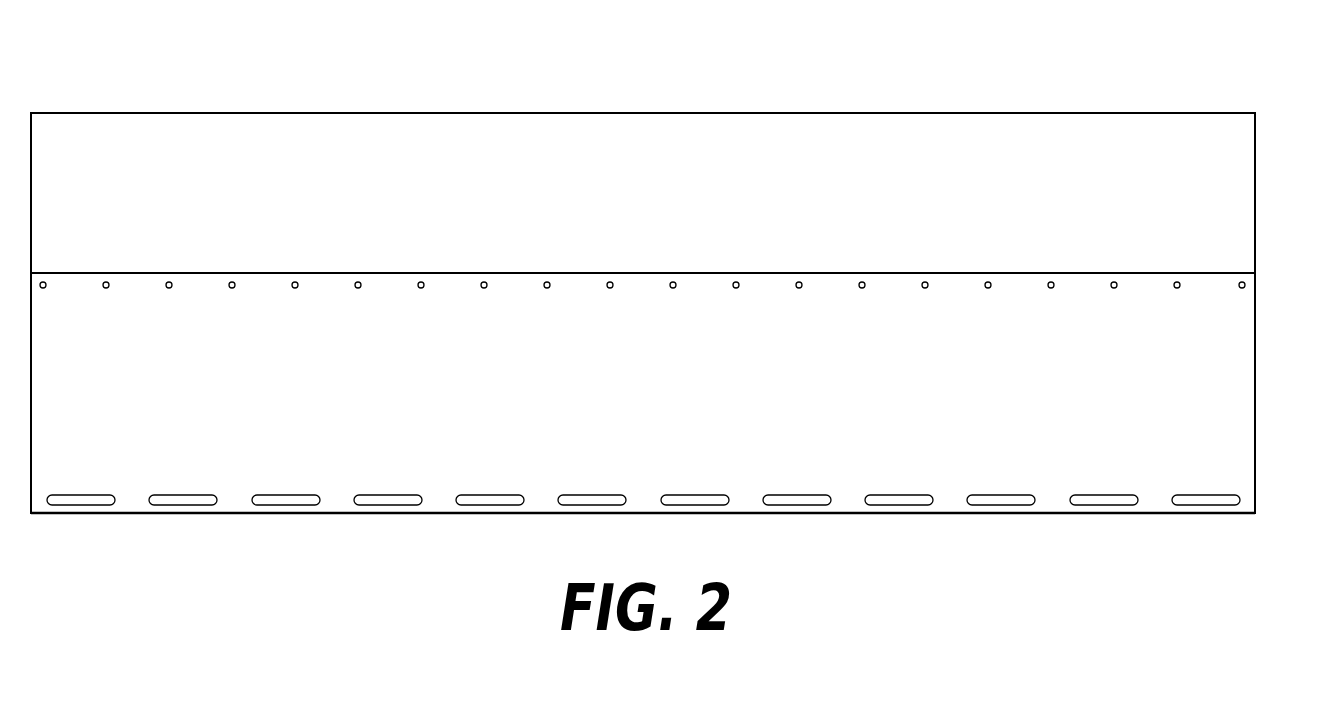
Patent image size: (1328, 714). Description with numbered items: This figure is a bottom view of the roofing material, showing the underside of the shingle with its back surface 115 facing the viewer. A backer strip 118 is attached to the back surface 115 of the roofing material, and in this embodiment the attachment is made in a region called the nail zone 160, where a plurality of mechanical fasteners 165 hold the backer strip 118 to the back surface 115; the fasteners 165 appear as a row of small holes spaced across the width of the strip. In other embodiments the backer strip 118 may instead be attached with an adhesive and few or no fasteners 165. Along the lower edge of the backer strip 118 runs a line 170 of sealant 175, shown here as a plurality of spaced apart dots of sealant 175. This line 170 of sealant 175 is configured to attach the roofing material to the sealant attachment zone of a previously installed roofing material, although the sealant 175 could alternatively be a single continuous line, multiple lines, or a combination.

The back surface 115 is at (1188, 130).
The backer strip 118 is at (1225, 397).
The nail zone 160 is at (1262, 296).
The mechanical fasteners 165 is at (1243, 281).
The line of sealant 170 is at (1262, 499).
The sealant 175 is at (1206, 501).